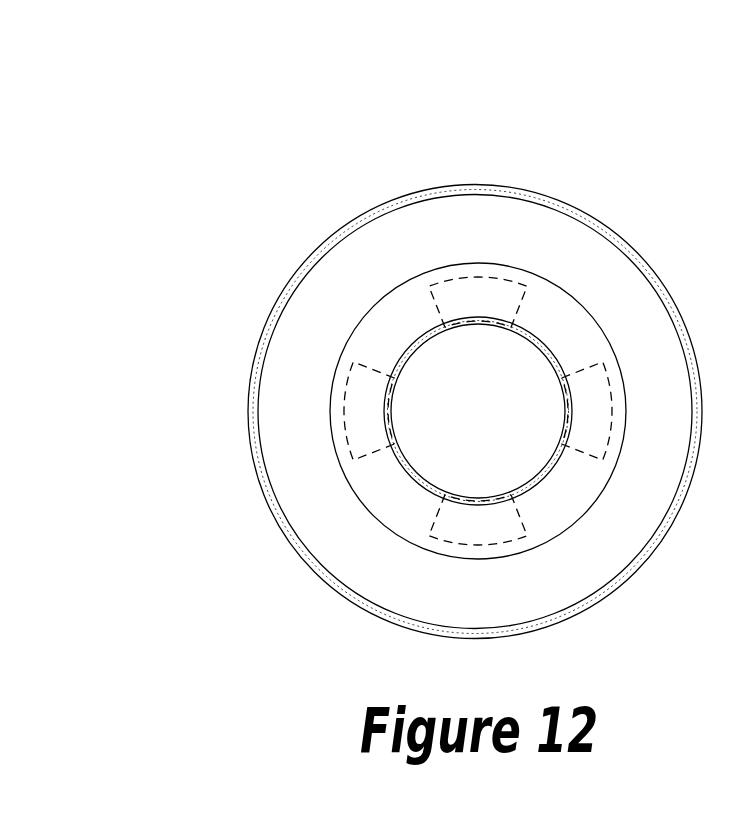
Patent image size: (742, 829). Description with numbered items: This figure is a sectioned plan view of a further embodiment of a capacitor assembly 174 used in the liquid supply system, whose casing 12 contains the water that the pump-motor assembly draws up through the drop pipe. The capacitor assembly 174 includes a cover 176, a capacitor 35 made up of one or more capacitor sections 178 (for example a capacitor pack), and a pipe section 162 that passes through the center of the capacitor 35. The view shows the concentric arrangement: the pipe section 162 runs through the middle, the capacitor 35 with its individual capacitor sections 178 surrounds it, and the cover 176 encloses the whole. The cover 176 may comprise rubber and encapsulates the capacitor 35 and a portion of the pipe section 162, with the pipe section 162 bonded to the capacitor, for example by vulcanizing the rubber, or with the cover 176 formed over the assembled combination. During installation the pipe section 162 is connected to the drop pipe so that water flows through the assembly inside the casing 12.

The capacitor 35 is at (446, 117).
The casing 12 is at (247, 400).
The capacitor assembly 174 is at (585, 287).
The pipe section 162 is at (408, 350).
The cover 176 is at (408, 283).
The capacitor sections 178 is at (475, 268).